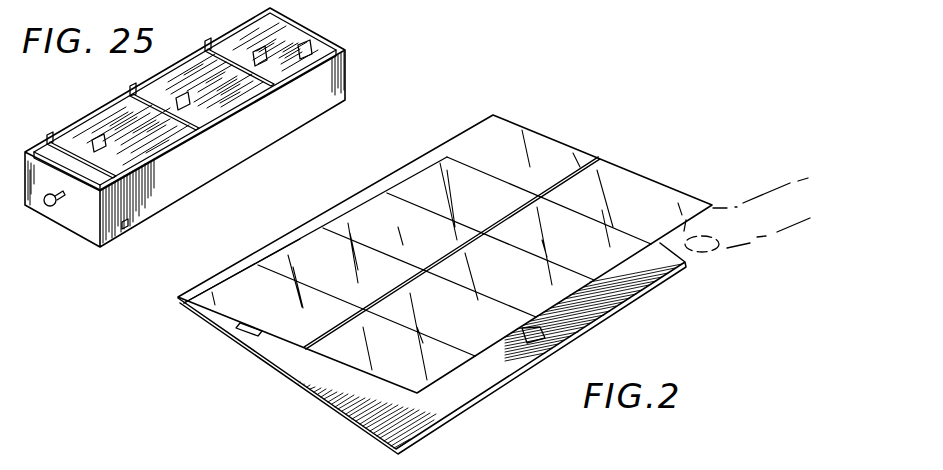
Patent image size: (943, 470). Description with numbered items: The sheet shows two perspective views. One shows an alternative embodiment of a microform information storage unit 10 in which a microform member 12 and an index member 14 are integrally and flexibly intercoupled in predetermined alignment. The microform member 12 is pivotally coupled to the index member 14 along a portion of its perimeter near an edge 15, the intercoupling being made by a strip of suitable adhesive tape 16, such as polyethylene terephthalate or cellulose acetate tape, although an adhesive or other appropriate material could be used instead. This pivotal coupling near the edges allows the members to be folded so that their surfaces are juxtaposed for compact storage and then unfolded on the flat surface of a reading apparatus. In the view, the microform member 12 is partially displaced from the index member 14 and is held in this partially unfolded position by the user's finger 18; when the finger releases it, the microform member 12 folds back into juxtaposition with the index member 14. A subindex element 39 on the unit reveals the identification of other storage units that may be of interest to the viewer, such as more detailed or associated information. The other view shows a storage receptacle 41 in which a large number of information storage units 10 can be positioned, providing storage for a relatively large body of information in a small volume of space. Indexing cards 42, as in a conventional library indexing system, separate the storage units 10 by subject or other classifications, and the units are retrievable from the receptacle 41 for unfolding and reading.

In FIG. 2, the information storage unit 10 is at (578, 142).
In FIG. 2, the microform member 12 is at (636, 196).
In FIG. 2, the index member 14 is at (360, 410).
In FIG. 2, the edge 15 is at (286, 235).
In FIG. 2, the adhesive tape 16 is at (423, 162).
In FIG. 2, the user's finger 18 is at (756, 236).
In FIG. 2, the subindex element 39 is at (252, 334).
In FIG. 25, the storage receptacle 41 is at (126, 226).
In FIG. 25, the indexing cards 42 is at (60, 137).